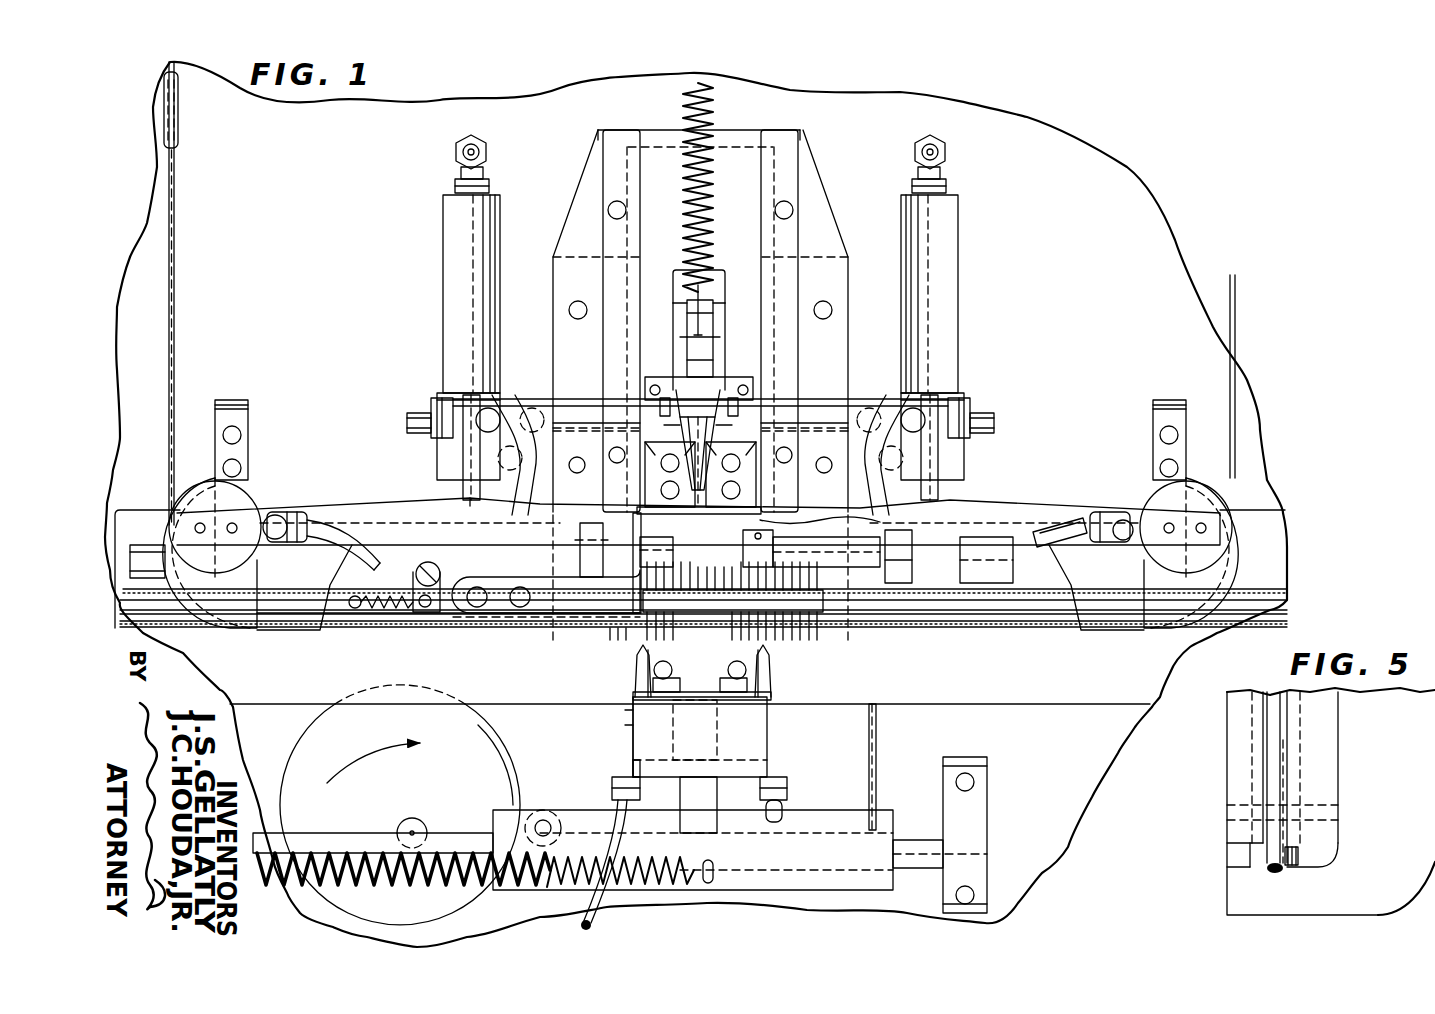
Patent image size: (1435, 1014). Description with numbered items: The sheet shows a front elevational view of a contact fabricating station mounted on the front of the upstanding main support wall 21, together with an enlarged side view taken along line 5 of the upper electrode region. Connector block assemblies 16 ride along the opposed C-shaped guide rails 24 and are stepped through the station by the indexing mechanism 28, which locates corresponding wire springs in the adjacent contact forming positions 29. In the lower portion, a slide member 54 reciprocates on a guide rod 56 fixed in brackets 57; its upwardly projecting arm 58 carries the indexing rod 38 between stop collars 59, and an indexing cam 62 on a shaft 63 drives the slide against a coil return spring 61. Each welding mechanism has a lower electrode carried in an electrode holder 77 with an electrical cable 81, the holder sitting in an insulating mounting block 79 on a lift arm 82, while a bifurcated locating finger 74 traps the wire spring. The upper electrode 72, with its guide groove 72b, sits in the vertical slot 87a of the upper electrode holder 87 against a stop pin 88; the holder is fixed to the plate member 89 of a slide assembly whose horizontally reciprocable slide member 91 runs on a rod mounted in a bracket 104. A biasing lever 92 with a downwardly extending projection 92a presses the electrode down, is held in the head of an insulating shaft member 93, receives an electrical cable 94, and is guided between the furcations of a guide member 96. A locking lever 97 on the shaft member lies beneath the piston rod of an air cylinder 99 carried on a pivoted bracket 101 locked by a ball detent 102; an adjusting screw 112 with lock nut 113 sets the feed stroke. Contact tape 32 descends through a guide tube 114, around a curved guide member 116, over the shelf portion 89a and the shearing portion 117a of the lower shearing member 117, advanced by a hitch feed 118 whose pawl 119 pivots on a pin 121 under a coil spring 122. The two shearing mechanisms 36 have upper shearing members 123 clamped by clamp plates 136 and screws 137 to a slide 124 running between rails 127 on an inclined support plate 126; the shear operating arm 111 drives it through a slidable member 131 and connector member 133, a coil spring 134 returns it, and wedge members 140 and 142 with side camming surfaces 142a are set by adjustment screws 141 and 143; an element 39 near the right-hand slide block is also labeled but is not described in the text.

In FIG. 1, the brush comb 5 is at (652, 598).
In FIG. 1, the connector block assembly 16 is at (823, 618).
In FIG. 1, the main support wall 21 is at (523, 120).
In FIG. 1, the guide rails 24 is at (903, 600).
In FIG. 1, the indexing mechanism 28 is at (543, 828).
In FIG. 1, the contact forming positions 29 is at (757, 648).
In FIG. 1, the contact tape 32 is at (175, 277).
In FIG. 5, the contact tape 32 is at (1270, 871).
In FIG. 1, the shearing mechanisms 36 is at (750, 517).
In FIG. 1, the indexing rod 38 is at (947, 563).
In FIG. 1, the slide block 39 is at (1003, 560).
In FIG. 1, the slide member 54 is at (827, 877).
In FIG. 1, the guide rod 56 is at (912, 843).
In FIG. 1, the brackets 57 is at (987, 796).
In FIG. 1, the upwardly projecting arm 58 is at (858, 731).
In FIG. 1, the stop collars 59 is at (777, 555).
In FIG. 1, the coil return spring 61 is at (650, 885).
In FIG. 1, the indexing cam 62 is at (493, 760).
In FIG. 1, the shaft 63 is at (412, 820).
In FIG. 1, the upper electrode 72 is at (640, 557).
In FIG. 5, the upper electrode 72 is at (1277, 750).
In FIG. 5, the guide groove 72b is at (1293, 863).
In FIG. 1, the bifurcated locating finger 74 is at (637, 663).
In FIG. 1, the electrode holder 77 is at (700, 740).
In FIG. 1, the mounting block 79 is at (673, 777).
In FIG. 1, the electrical cable 81 is at (628, 770).
In FIG. 1, the lift arm 82 is at (717, 797).
In FIG. 1, the upper electrode holder 87 is at (497, 603).
In FIG. 5, the upper electrode holder 87 is at (1235, 773).
In FIG. 5, the vertical slot 87a is at (1302, 765).
In FIG. 5, the stop pin 88 is at (1322, 820).
In FIG. 1, the plate member 89 is at (337, 607).
In FIG. 1, the shelf portion 89a is at (462, 625).
In FIG. 1, the slide member 91 is at (440, 446).
In FIG. 1, the biasing lever 92 is at (400, 527).
In FIG. 1, the downwardly extending projection 92a is at (673, 547).
In FIG. 1, the shaft member 93 is at (237, 500).
In FIG. 1, the electrical cable 94 is at (345, 542).
In FIG. 1, the guide member 96 is at (580, 563).
In FIG. 1, the upper electrode locking lever 97 is at (312, 498).
In FIG. 1, the air cylinder 99 is at (455, 250).
In FIG. 1, the bracket 101 is at (510, 393).
In FIG. 1, the spring biased ball detent 102 is at (470, 458).
In FIG. 1, the bracket 104 is at (242, 418).
In FIG. 1, the shear operating arm 111 is at (707, 347).
In FIG. 1, the adjusting screw 112 is at (413, 415).
In FIG. 1, the lock nut 113 is at (440, 398).
In FIG. 1, the guide tube 114 is at (179, 133).
In FIG. 1, the curved guide member 116 is at (213, 618).
In FIG. 1, the lower shearing member 117 is at (568, 548).
In FIG. 5, the lower shearing member 117 is at (1380, 903).
In FIG. 1, the shearing portion 117a is at (550, 633).
In FIG. 5, the shearing portion 117a is at (1233, 907).
In FIG. 1, the contact tape hitch feed 118 is at (408, 588).
In FIG. 1, the pawl 119 is at (428, 612).
In FIG. 1, the pin 121 is at (420, 570).
In FIG. 1, the coil spring 122 is at (392, 610).
In FIG. 1, the upper shearing members 123 is at (637, 510).
In FIG. 1, the slide 124 is at (732, 160).
In FIG. 1, the inclined support plate 126 is at (577, 217).
In FIG. 1, the rails 127 is at (613, 172).
In FIG. 1, the slidable member 131 is at (707, 320).
In FIG. 1, the connector member 133 is at (728, 378).
In FIG. 1, the coil spring 134 is at (713, 183).
In FIG. 1, the clamp plates 136 is at (653, 452).
In FIG. 1, the screws 137 is at (663, 490).
In FIG. 1, the wedge member 140 is at (645, 428).
In FIG. 1, the adjustment screw 141 is at (640, 403).
In FIG. 1, the wedge member 142 is at (699, 440).
In FIG. 1, the side camming surfaces 142a is at (680, 422).
In FIG. 1, the adjustment screw 143 is at (682, 400).